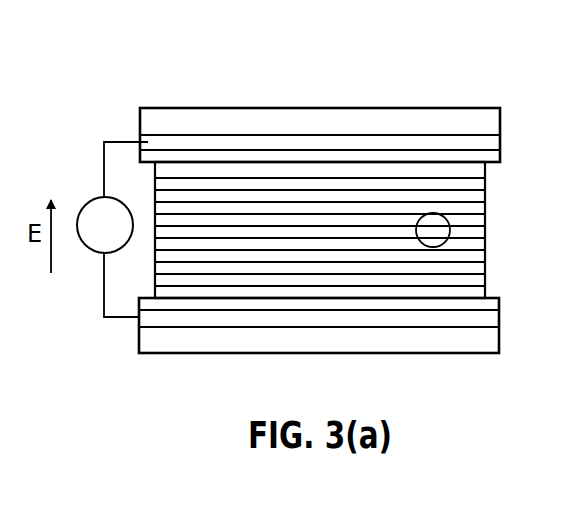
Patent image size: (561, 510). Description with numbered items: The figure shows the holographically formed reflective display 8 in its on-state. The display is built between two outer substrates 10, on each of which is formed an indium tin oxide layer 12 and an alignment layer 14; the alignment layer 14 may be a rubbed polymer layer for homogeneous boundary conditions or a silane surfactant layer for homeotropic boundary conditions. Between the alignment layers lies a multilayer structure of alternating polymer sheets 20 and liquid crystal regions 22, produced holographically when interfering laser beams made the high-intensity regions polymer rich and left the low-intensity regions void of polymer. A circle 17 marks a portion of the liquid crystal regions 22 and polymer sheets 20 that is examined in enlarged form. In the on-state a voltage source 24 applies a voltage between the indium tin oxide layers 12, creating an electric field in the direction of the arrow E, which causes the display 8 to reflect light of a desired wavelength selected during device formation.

The holographically formed reflective display 8 is at (422, 96).
The substrate 10 is at (484, 108).
The indium tin oxide layer 12 is at (148, 142).
The alignment layer 14 is at (496, 152).
The circle 17 is at (442, 232).
The polymer sheet 20 is at (472, 262).
The liquid crystal region 22 is at (476, 187).
The voltage source 24 is at (97, 198).